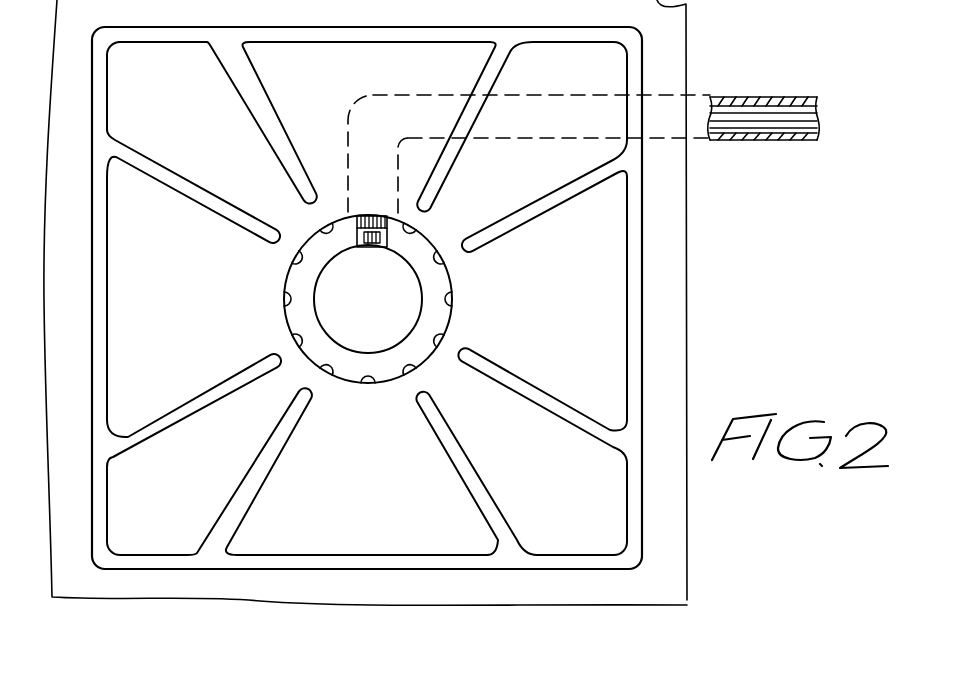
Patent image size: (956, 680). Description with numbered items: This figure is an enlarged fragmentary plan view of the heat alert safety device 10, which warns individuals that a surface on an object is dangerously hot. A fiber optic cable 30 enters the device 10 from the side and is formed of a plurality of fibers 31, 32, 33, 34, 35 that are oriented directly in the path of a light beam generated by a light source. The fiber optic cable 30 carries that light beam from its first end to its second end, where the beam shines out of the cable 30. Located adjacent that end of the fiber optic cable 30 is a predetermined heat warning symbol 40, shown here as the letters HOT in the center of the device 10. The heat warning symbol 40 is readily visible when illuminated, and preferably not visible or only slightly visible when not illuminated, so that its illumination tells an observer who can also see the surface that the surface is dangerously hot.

The device 10 is at (578, 113).
The fiber optic cable 30 is at (782, 118).
The fiber 31 is at (345, 237).
The fiber 32 is at (357, 244).
The fiber 33 is at (358, 214).
The fiber 34 is at (387, 223).
The fiber 35 is at (388, 240).
The heat warning symbol 40 is at (368, 312).